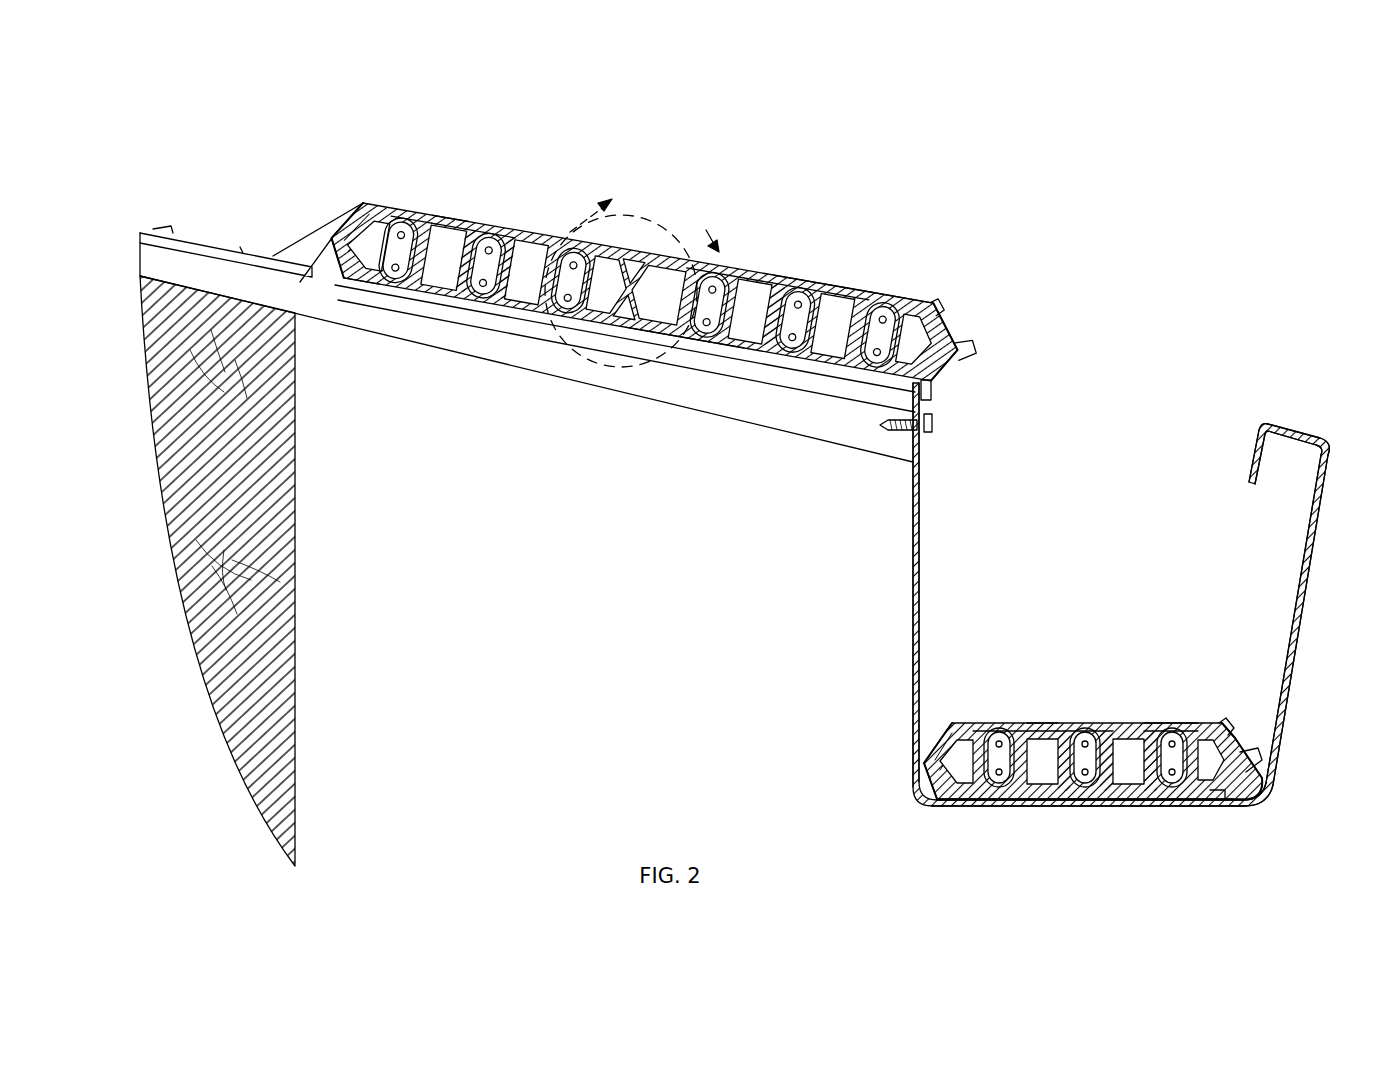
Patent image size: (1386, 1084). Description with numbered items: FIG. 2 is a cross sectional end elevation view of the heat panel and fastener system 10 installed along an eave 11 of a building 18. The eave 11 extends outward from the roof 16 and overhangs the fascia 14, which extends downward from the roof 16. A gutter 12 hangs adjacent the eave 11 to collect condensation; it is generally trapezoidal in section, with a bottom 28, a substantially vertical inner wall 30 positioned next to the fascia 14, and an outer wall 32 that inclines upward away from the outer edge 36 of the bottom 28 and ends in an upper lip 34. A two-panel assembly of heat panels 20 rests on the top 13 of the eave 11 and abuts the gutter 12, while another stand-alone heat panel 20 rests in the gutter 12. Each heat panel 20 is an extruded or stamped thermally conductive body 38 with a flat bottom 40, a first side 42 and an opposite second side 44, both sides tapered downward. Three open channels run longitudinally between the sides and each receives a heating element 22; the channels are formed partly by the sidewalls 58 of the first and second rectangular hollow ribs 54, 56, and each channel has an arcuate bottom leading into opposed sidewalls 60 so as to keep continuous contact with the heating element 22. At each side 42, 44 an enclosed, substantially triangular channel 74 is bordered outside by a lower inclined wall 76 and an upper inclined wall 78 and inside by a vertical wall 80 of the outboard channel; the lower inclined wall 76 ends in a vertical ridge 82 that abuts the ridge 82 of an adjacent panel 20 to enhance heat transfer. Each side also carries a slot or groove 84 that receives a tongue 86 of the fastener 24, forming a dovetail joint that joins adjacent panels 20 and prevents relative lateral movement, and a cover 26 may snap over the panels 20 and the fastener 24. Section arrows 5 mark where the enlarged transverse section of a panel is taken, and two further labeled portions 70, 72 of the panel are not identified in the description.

The section line 5 is at (644, 219).
The heat panel and fastener system 10 is at (535, 131).
The eave 11 is at (698, 392).
The gutter 12 is at (1290, 727).
The top of the eave 13 is at (705, 372).
The fascia 14 is at (222, 690).
The roof 16 is at (868, 392).
The building 18 is at (300, 722).
The heat panel 20 is at (548, 312).
The heating element 22 is at (397, 272).
The fastener 24 is at (640, 258).
The cover 26 is at (829, 290).
The bottom of the gutter 28 is at (1028, 802).
The inner wall 30 is at (921, 607).
The outer wall 32 is at (1272, 772).
The upper lip 34 is at (1312, 430).
The outer edge 36 is at (1252, 805).
The body 38 is at (467, 250).
The bottom 40 is at (494, 338).
The first side 42 is at (322, 276).
The second side 44 is at (690, 352).
The first hollow rib 54 is at (448, 226).
The second hollow rib 56 is at (530, 252).
The sidewalls of the ribs 58 is at (422, 232).
The sidewall of the channel 60 is at (497, 292).
The web 70 is at (765, 352).
The top wall section 72 is at (852, 300).
The enclosed channel 74 is at (908, 326).
The lower inclined wall 76 is at (936, 402).
The upper inclined wall 78 is at (918, 320).
The vertical wall 80 is at (352, 237).
The vertical ridge 82 is at (958, 352).
The slot or groove 84 is at (347, 224).
The tongue 86 is at (637, 264).